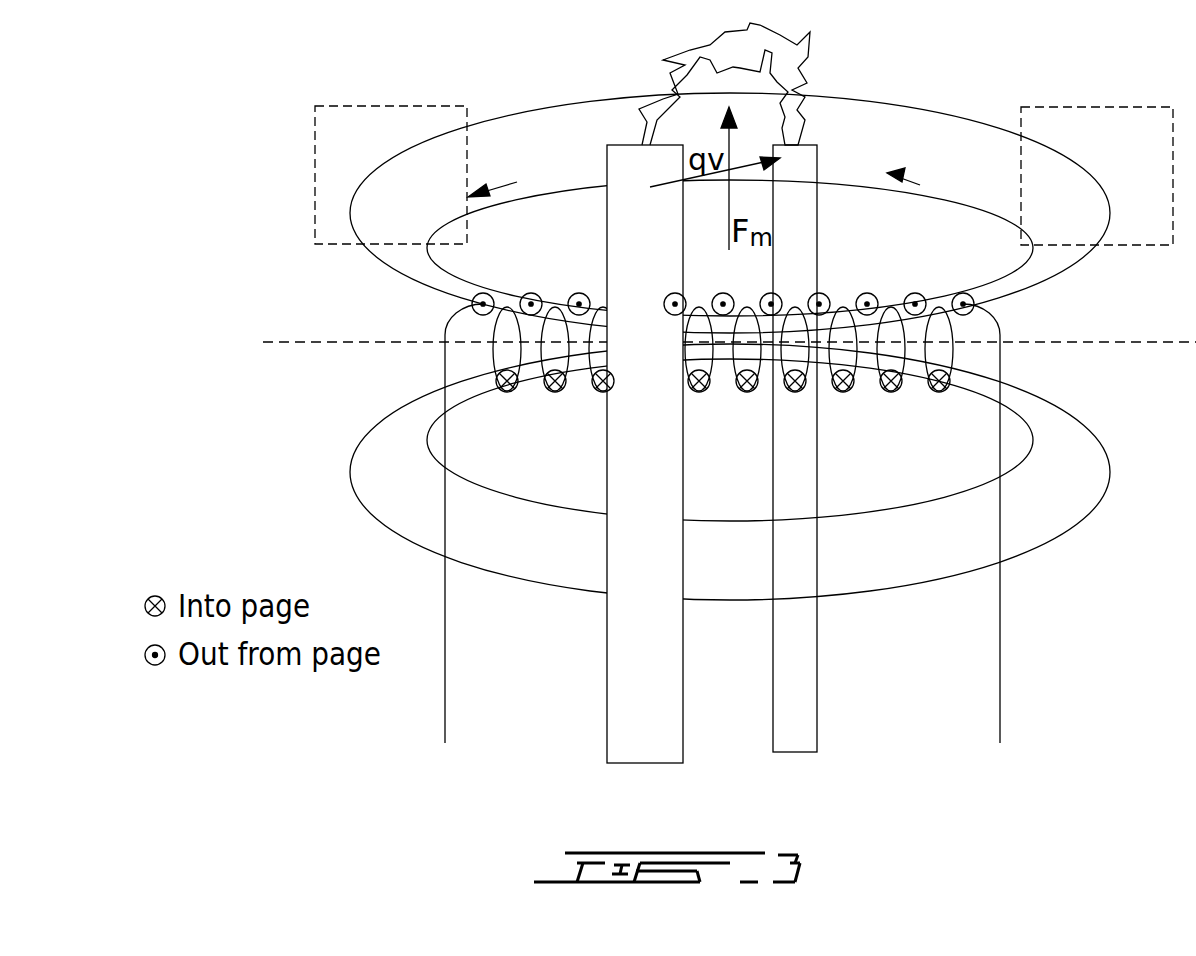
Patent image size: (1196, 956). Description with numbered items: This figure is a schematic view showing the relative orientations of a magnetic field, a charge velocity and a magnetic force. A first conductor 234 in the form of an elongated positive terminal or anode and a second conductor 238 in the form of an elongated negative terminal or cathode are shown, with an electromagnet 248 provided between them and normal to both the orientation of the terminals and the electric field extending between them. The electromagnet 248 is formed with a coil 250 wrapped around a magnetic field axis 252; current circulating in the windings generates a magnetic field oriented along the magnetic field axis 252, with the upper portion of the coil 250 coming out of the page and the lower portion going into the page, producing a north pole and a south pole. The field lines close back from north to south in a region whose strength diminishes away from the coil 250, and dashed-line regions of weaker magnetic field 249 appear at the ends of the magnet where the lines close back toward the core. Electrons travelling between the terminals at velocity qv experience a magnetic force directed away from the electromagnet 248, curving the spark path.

The first conductor 234 is at (640, 658).
The second conductor 238 is at (795, 652).
The electromagnet 248 is at (338, 300).
The regions of weaker magnetic field 249 is at (390, 106).
The coil 250 is at (445, 362).
The magnetic field axis 252 is at (290, 343).